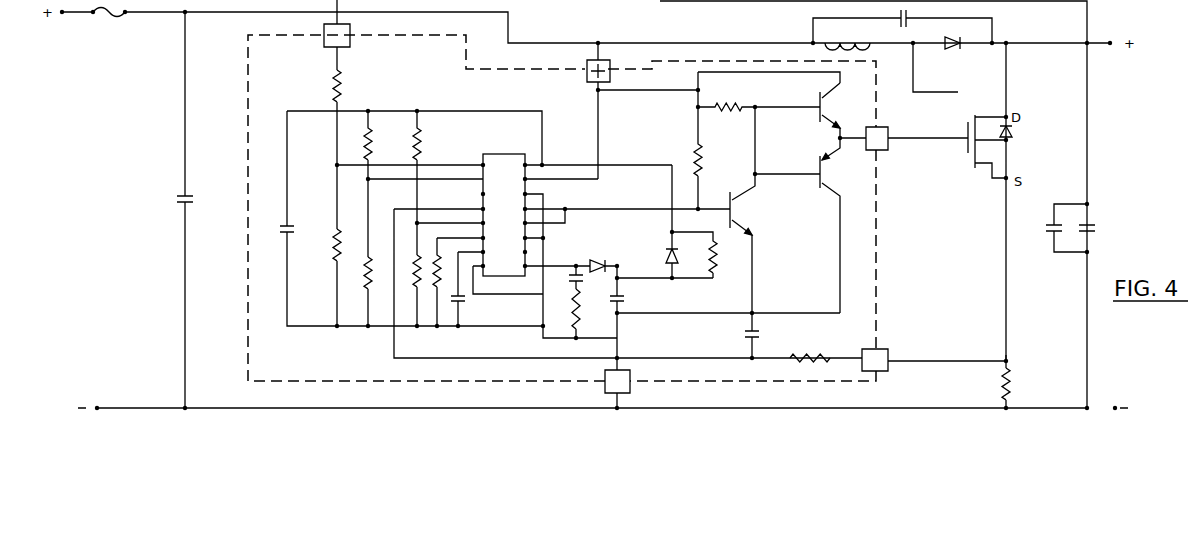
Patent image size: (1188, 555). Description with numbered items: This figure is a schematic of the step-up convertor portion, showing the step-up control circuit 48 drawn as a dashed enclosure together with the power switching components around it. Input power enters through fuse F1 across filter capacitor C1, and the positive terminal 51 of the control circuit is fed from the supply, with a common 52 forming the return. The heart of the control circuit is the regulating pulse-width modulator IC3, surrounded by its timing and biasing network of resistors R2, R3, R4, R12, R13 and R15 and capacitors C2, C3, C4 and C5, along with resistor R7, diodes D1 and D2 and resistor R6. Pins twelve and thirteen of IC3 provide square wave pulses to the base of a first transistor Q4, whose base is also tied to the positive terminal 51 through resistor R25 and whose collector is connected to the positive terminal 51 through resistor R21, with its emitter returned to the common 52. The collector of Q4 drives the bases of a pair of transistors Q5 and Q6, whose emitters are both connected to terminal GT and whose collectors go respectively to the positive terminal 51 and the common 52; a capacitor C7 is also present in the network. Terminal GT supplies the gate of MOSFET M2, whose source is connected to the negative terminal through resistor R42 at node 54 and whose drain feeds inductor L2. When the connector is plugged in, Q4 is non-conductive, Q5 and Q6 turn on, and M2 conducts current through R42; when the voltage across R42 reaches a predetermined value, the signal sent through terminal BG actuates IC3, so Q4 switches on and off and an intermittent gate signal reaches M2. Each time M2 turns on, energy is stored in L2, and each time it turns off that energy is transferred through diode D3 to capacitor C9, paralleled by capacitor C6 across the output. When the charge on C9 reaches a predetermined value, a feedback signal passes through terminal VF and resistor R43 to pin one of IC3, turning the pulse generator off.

The fuse F1 is at (109, 23).
The input filter capacitor C1 is at (173, 210).
The terminal VF is at (337, 35).
The resistor R43 is at (353, 149).
The step-up control circuit 48 is at (248, 380).
The common 52 is at (312, 328).
The capacitor C2 is at (275, 229).
The resistor R2 is at (321, 277).
The resistor R3 is at (378, 184).
The resistor R4 is at (356, 291).
The resistor R12 is at (432, 183).
The resistor R13 is at (408, 290).
The resistor R15 is at (430, 282).
The capacitor C3 is at (468, 289).
The regulating pulse-width modulator IC3 is at (504, 206).
The capacitor C4 is at (566, 278).
The resistor R7 is at (688, 325).
The diode D1 is at (596, 257).
The capacitor C5 is at (641, 312).
The diode D2 is at (677, 221).
The resistor R6 is at (705, 255).
The positive terminal 51 is at (590, 79).
The resistor R25 is at (713, 140).
The resistor R21 is at (759, 117).
The first transistor Q4 is at (743, 243).
The capacitor C7 is at (857, 184).
The transistor Q5 is at (831, 110).
The transistor Q6 is at (834, 225).
The terminal GT is at (904, 138).
The MOSFET M2 is at (1010, 202).
The inductor L2 is at (847, 37).
The diode D3 is at (936, 64).
The output capacitor C6 is at (1054, 228).
The capacitor C9 is at (1098, 229).
The terminal BG is at (934, 360).
The current sense node 54 is at (1008, 361).
The resistor R42 is at (1022, 388).